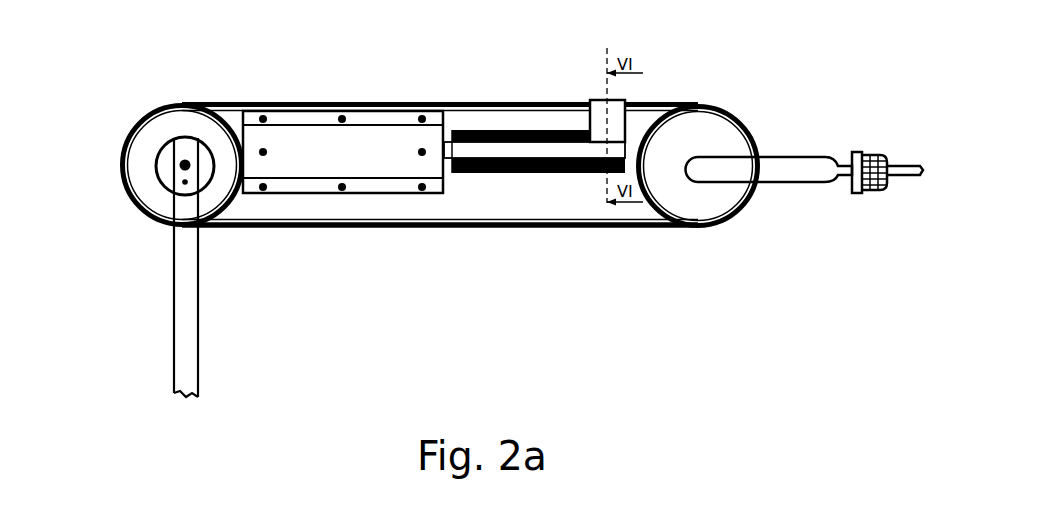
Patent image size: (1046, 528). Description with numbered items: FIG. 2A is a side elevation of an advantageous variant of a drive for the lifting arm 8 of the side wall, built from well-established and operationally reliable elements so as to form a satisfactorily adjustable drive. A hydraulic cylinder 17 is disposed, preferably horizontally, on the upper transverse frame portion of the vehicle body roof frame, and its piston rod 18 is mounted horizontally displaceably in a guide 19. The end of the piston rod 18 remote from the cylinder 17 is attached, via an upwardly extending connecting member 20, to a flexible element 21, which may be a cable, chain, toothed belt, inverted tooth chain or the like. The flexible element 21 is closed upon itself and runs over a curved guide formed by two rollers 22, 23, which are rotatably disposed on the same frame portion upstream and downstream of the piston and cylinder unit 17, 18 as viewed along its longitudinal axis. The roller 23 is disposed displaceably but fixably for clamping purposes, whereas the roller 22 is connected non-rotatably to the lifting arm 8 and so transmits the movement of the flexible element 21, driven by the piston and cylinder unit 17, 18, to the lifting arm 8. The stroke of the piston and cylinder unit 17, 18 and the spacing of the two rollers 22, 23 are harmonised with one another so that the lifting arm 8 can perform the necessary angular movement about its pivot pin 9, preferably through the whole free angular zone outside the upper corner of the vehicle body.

The lifting arm 8 is at (185, 306).
The pivot pin 9 is at (188, 160).
The hydraulic cylinder 17 is at (335, 147).
The piston rod 18 is at (473, 155).
The guide 19 is at (538, 130).
The connecting member 20 is at (613, 128).
The flexible element 21 is at (442, 230).
The roller 22 is at (143, 148).
The roller 23 is at (713, 207).